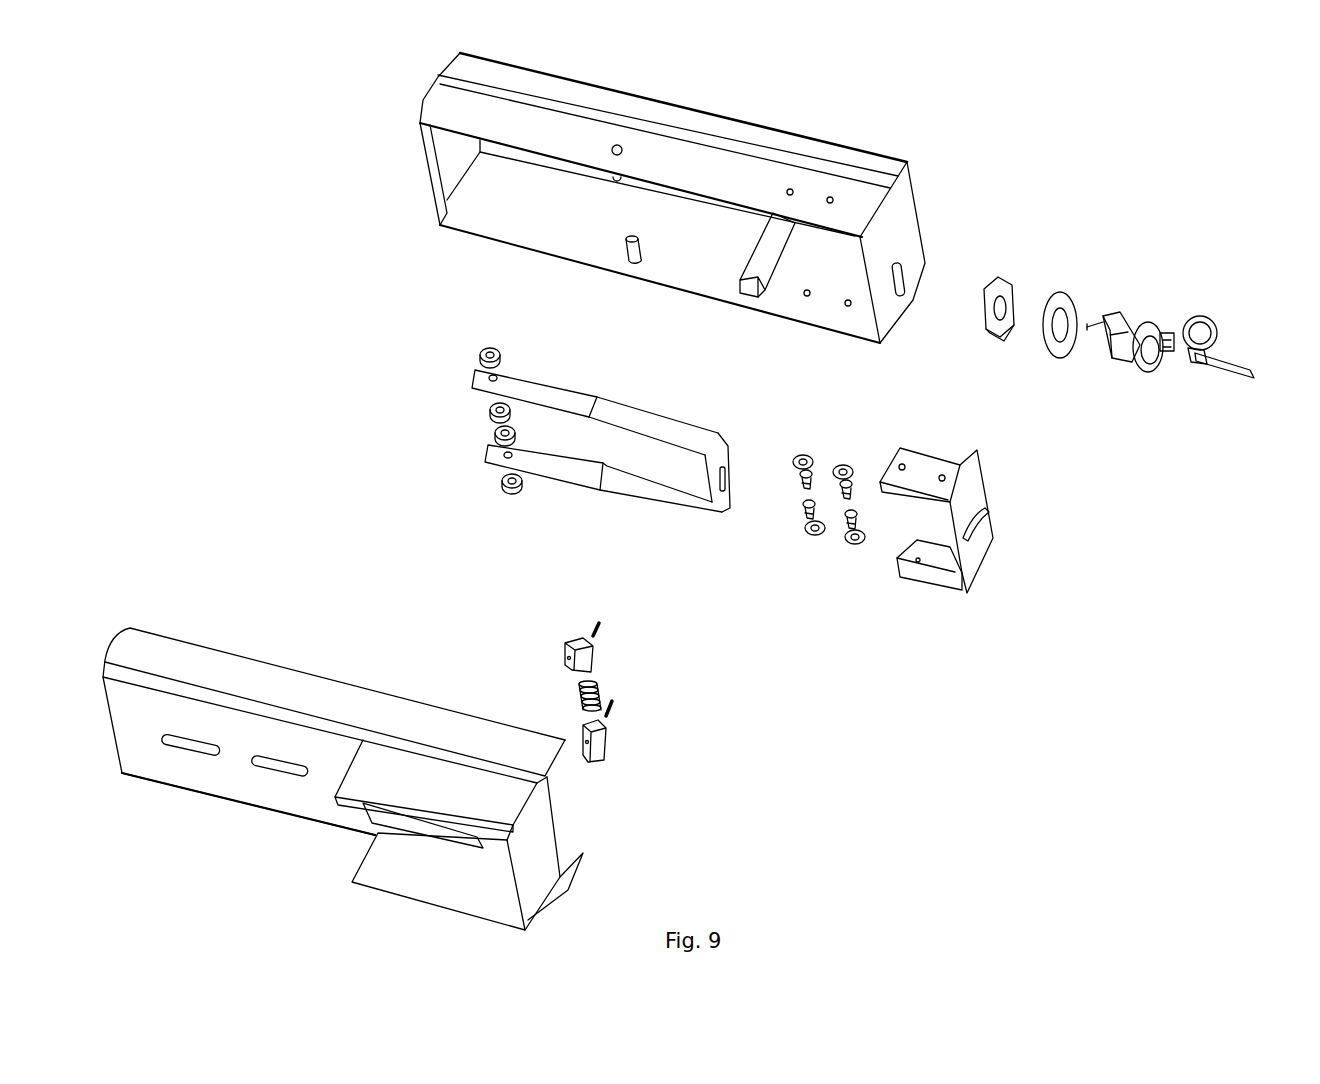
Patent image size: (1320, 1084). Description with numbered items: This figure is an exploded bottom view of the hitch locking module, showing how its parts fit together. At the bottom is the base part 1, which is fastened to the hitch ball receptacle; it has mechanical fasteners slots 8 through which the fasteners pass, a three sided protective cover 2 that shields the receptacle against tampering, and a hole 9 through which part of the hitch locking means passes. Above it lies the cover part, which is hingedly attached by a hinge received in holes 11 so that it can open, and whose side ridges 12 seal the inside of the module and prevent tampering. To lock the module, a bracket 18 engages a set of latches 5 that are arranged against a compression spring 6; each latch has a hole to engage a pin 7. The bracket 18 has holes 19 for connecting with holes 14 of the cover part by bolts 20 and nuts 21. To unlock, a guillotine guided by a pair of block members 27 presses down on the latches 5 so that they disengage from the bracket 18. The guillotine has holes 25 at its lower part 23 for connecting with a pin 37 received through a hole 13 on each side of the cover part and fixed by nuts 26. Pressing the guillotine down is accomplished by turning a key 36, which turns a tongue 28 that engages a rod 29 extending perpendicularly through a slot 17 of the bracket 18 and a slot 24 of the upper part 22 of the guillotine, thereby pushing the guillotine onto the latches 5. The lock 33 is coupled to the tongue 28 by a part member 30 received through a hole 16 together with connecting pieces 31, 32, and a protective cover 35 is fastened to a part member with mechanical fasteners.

The base part 1 is at (339, 733).
The three sided protective cover 2 is at (455, 890).
The latches 5 is at (592, 665).
The compression spring 6 is at (583, 690).
The pin 7 is at (592, 630).
The mechanical fasteners slots 8 is at (195, 752).
The hole 9 is at (372, 820).
The holes 11 is at (610, 234).
The side ridges 12 is at (440, 93).
The hole 13 is at (617, 150).
The holes 14 is at (830, 200).
The hole 16 is at (920, 240).
The slot 17 is at (985, 520).
The bracket 18 is at (955, 536).
The holes 19 is at (902, 467).
The bolts 20 is at (812, 510).
The nuts 21 is at (815, 532).
The upper part 22 is at (672, 500).
The lower part 23 is at (544, 527).
The slot 24 is at (725, 498).
The holes 25 is at (493, 379).
The nuts 26 is at (481, 358).
The block members 27 is at (750, 277).
The tongue 28 is at (1107, 345).
The rod 29 is at (1086, 325).
The part member 30 is at (1140, 318).
The connecting piece 31 is at (1000, 276).
The connecting piece 32 is at (1062, 292).
The lock 33 is at (1155, 372).
The protective cover 35 is at (1208, 320).
The key 36 is at (1255, 380).
The pin 37 is at (627, 241).